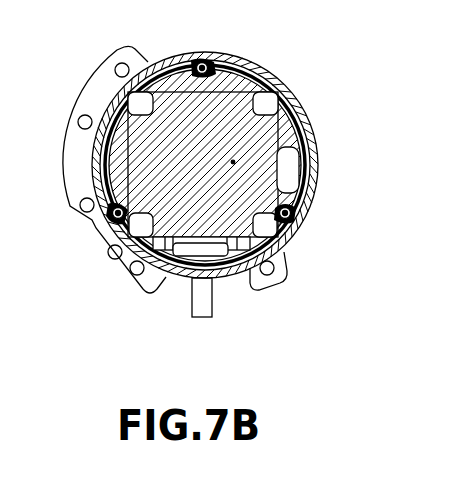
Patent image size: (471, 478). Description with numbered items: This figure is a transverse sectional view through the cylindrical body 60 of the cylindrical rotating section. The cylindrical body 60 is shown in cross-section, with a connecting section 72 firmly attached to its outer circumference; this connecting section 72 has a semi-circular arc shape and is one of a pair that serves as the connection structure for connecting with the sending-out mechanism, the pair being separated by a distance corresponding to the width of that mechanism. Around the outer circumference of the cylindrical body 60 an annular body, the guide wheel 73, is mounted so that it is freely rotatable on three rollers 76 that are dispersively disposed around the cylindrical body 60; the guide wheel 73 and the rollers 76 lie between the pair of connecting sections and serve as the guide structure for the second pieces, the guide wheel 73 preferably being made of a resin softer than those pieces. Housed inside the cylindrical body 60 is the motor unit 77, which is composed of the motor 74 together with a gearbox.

The cylindrical body 60 is at (306, 117).
The connecting section 72 is at (118, 268).
The annular body (guide wheel) 73 is at (304, 226).
The motor 74 is at (235, 162).
The rollers 76 is at (238, 58).
The motor unit 77 is at (190, 243).